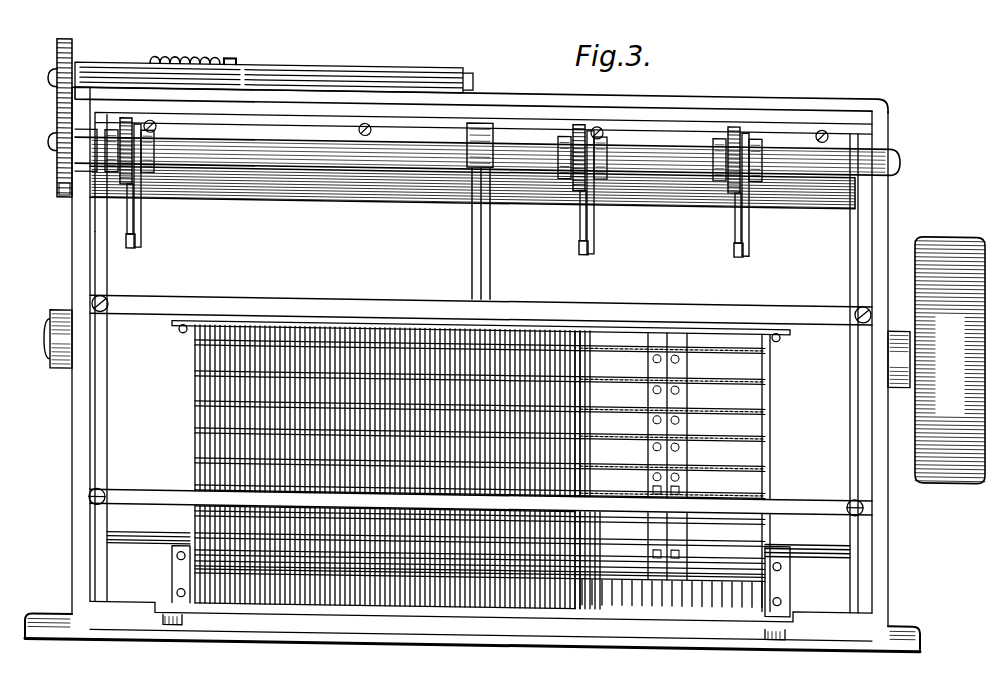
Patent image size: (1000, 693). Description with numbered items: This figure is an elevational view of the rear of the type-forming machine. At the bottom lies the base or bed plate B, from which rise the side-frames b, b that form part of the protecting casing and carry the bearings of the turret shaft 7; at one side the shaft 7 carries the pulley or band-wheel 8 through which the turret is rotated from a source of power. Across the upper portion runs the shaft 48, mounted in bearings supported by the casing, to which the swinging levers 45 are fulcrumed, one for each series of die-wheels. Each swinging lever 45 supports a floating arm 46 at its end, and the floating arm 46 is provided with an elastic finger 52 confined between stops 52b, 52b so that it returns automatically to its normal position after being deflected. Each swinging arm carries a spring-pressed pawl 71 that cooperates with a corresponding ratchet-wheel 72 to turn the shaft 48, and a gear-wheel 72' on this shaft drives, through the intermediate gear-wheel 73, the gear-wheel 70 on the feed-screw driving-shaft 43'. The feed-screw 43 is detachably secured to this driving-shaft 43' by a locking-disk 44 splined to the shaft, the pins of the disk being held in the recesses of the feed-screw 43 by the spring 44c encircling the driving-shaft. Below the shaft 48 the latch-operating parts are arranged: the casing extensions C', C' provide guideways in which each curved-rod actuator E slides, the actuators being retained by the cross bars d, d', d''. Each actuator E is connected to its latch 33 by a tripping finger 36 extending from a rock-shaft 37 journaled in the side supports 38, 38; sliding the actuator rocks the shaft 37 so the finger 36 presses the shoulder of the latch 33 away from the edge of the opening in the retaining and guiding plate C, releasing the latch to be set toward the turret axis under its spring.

The gear-wheel 70 is at (73, 45).
The gear-wheel 72' is at (32, 114).
The intermediate gear-wheel 73 is at (60, 195).
The spring 44c is at (172, 60).
The driving-shaft 43' is at (223, 46).
The locking-disk 44 is at (241, 60).
The feed-screw 43 is at (356, 59).
The ratchet-wheel 72 is at (438, 143).
The spring-pressed pawl 71 is at (114, 168).
The shaft 48 is at (283, 139).
The swinging lever 45 is at (145, 172).
The floating arm 46 is at (148, 212).
The elastic finger 52 is at (127, 218).
The stops 52b is at (131, 240).
The pulley or band-wheel 8 is at (946, 226).
The shaft 7 is at (46, 350).
The cross bar d is at (481, 298).
The cross bar d' is at (480, 483).
The cross bar d'' is at (481, 622).
The side supports 38 is at (192, 385).
The side-frames b is at (72, 414).
The extensions of the casing C' is at (476, 363).
The retaining and guiding plate C is at (676, 472).
The actuator E is at (582, 470).
The latch 33 is at (680, 413).
The tripping finger 36 is at (681, 448).
The rock-shaft 37 is at (748, 465).
The base or bed plate B is at (478, 641).